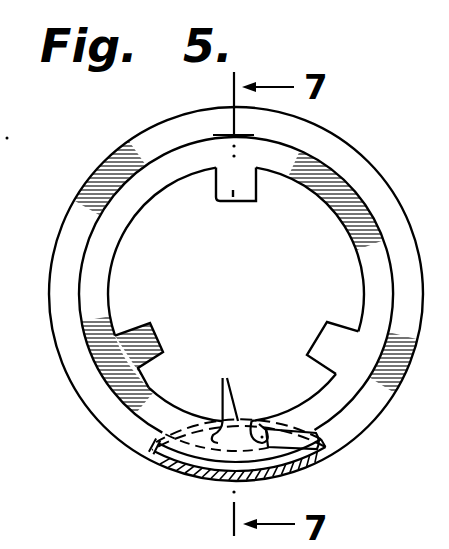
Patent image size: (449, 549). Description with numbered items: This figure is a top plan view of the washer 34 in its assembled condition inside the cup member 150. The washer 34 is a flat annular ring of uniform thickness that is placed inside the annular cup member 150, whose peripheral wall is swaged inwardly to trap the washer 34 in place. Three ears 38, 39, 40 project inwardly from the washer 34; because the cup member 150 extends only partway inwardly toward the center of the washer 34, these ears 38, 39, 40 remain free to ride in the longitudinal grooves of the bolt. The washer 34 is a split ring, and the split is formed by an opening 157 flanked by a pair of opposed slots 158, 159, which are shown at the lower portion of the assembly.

The washer 34 is at (398, 158).
The cup member 150 is at (163, 128).
The ear 38 is at (230, 202).
The ear 39 is at (152, 323).
The ear 40 is at (326, 337).
The opening 157 is at (222, 473).
The slot 158 is at (232, 397).
The slot 159 is at (338, 433).